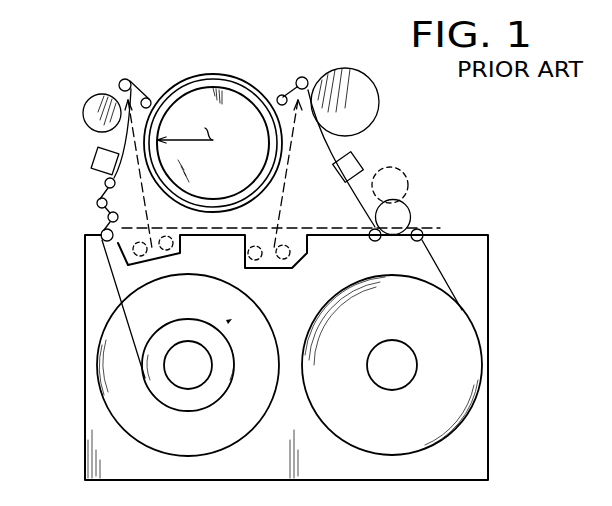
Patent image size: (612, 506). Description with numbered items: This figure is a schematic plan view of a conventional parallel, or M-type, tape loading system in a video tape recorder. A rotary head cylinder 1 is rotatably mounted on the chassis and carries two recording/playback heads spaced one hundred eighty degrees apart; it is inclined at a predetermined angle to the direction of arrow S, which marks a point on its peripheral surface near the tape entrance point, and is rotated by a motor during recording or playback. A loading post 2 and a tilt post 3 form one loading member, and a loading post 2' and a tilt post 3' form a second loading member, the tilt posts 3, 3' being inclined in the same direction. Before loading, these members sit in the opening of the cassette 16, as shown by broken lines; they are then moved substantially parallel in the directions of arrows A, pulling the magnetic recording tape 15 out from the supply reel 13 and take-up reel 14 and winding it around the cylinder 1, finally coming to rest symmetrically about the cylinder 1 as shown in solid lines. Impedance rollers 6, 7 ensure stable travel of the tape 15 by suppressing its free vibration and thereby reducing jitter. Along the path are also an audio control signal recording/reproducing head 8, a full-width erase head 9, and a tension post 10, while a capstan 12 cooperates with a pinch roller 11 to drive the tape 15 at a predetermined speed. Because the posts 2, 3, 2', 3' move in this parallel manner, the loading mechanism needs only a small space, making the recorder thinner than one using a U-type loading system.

The rotary head cylinder 1 is at (200, 95).
The loading post 2 is at (128, 164).
The tilt post 3 is at (171, 160).
The loading post 2' is at (299, 164).
The tilt post 3' is at (252, 160).
The impedance roller 6 is at (83, 113).
The impedance roller 7 is at (361, 102).
The audio control signal recording/reproducing head 8 is at (356, 164).
The full-width erase head 9 is at (94, 157).
The tension post 10 is at (97, 204).
The pinch roller 11 is at (411, 212).
The capstan 12 is at (372, 242).
The supply reel 13 is at (97, 366).
The take-up reel 14 is at (484, 375).
The magnetic recording tape 15 is at (443, 277).
The cassette 16 is at (490, 305).
The arrow S is at (185, 130).
The arrows A is at (146, 194).